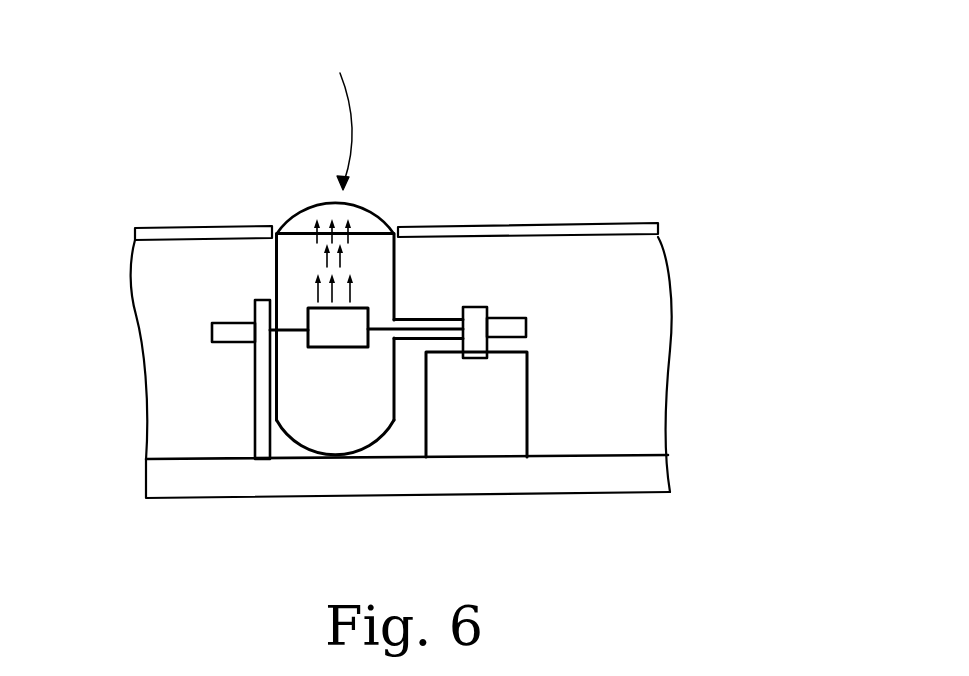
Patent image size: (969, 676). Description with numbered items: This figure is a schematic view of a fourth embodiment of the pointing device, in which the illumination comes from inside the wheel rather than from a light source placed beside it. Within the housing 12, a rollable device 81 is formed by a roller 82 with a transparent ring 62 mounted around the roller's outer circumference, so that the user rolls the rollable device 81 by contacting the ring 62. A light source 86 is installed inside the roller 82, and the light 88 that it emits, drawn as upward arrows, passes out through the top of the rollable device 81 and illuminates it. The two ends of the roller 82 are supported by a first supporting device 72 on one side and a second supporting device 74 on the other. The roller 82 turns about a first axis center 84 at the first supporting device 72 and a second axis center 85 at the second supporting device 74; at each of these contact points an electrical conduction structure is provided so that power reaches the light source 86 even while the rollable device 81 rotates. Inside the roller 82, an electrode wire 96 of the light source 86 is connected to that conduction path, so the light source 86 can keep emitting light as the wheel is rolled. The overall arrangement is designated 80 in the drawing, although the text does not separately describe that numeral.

The housing 12 is at (158, 232).
The ring 62 is at (368, 223).
The first supporting device 72 is at (266, 407).
The second supporting device 74 is at (485, 355).
The apparatus assembly 80 is at (520, 122).
The rollable device 81 is at (340, 115).
The roller 82 is at (288, 276).
The first axis center 84 is at (213, 330).
The second axis center 85 is at (517, 326).
The light source 86 is at (346, 330).
The light 88 is at (316, 272).
The electrode wire 96 is at (286, 331).